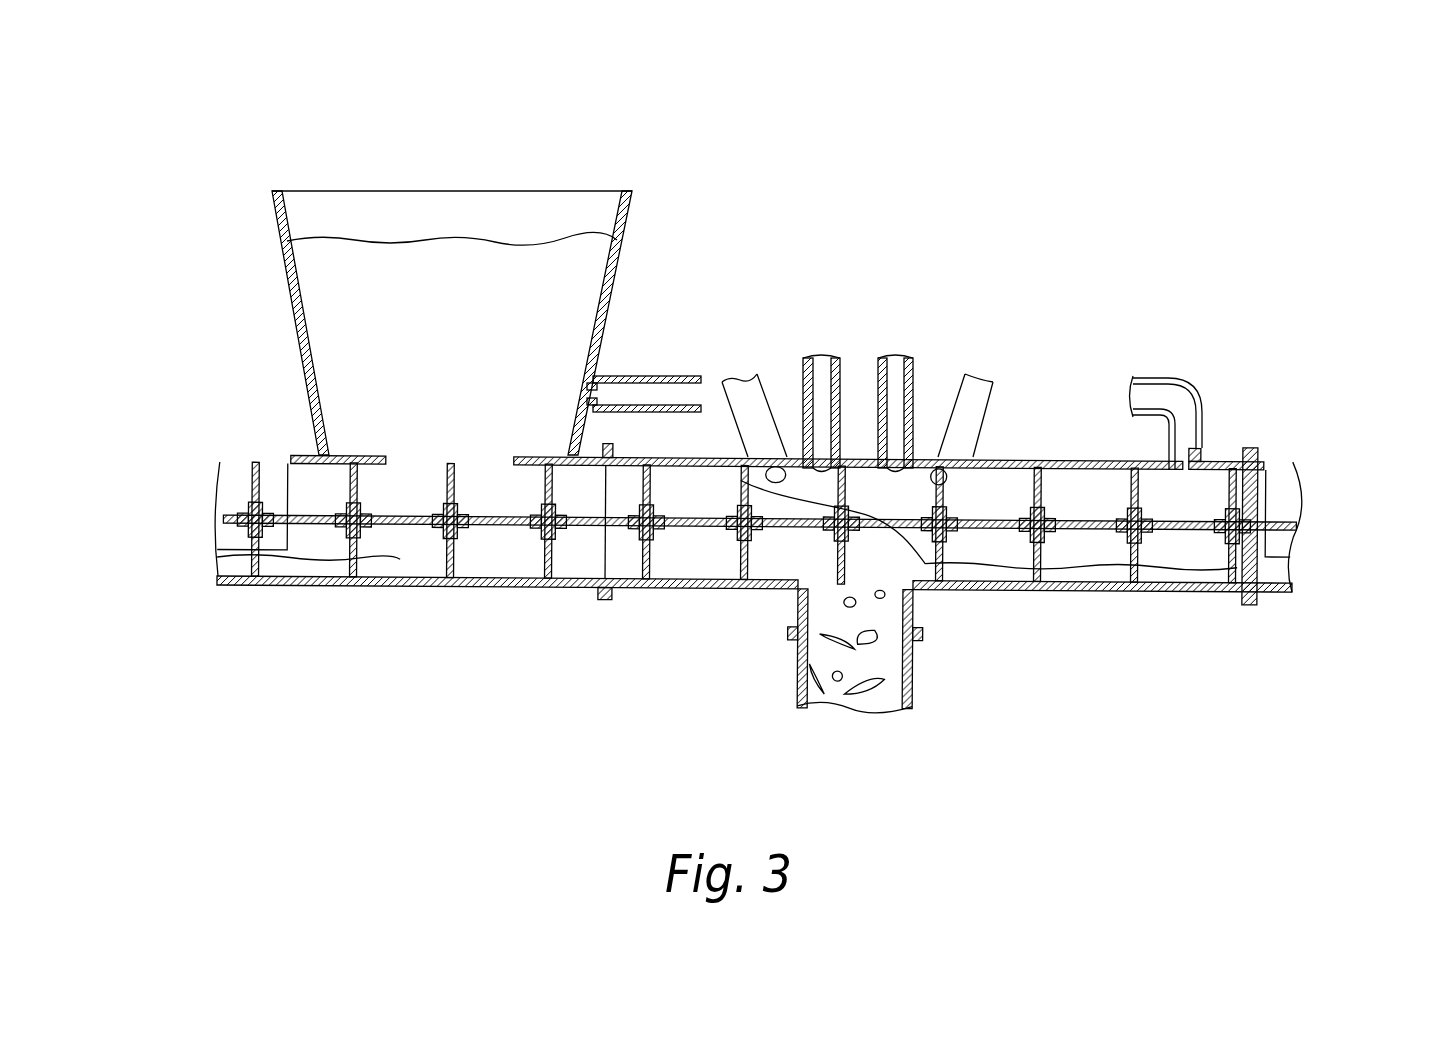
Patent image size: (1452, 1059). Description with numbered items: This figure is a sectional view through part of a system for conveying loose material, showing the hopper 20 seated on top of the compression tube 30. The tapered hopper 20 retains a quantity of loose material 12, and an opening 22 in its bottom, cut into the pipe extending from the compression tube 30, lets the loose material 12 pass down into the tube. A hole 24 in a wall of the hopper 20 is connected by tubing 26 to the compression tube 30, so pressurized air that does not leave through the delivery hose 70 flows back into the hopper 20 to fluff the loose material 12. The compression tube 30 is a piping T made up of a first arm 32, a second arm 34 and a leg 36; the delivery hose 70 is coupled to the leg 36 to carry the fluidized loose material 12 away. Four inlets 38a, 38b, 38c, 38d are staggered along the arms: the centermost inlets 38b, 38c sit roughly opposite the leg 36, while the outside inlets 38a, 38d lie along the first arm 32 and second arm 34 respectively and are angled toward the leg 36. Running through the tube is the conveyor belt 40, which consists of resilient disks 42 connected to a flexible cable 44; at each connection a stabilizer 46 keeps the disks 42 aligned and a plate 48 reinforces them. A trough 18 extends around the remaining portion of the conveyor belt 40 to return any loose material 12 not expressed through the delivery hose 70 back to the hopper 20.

The loose material 12 is at (440, 240).
The trough 18 is at (1293, 537).
The hopper 20 is at (287, 282).
The opening 22 is at (503, 457).
The hole 24 is at (598, 378).
The tubing 26 is at (672, 378).
The compression tube 30 is at (1078, 458).
The first arm 32 is at (692, 585).
The second arm 34 is at (1018, 587).
The leg 36 is at (912, 617).
The inlet 38a is at (783, 385).
The inlet 38b is at (798, 398).
The inlet 38c is at (870, 393).
The inlet 38d is at (948, 385).
The conveyor belt 40 is at (1083, 533).
The resilient disks 42 is at (347, 548).
The flexible cable 44 is at (300, 527).
The stabilizer 46 is at (448, 530).
The plate 48 is at (547, 537).
The delivery hose 70 is at (797, 663).